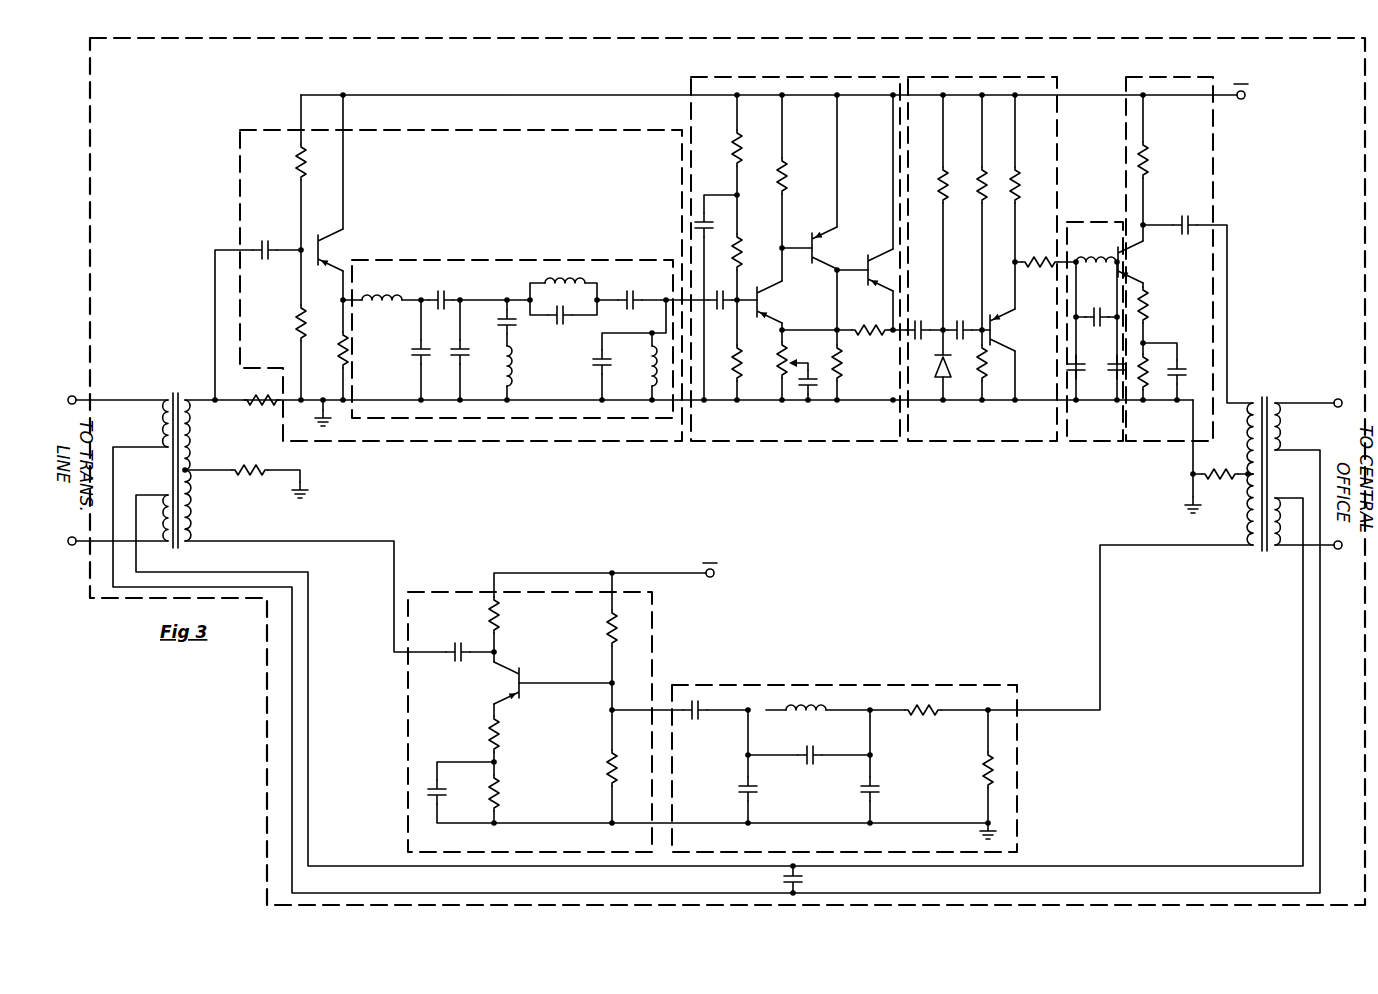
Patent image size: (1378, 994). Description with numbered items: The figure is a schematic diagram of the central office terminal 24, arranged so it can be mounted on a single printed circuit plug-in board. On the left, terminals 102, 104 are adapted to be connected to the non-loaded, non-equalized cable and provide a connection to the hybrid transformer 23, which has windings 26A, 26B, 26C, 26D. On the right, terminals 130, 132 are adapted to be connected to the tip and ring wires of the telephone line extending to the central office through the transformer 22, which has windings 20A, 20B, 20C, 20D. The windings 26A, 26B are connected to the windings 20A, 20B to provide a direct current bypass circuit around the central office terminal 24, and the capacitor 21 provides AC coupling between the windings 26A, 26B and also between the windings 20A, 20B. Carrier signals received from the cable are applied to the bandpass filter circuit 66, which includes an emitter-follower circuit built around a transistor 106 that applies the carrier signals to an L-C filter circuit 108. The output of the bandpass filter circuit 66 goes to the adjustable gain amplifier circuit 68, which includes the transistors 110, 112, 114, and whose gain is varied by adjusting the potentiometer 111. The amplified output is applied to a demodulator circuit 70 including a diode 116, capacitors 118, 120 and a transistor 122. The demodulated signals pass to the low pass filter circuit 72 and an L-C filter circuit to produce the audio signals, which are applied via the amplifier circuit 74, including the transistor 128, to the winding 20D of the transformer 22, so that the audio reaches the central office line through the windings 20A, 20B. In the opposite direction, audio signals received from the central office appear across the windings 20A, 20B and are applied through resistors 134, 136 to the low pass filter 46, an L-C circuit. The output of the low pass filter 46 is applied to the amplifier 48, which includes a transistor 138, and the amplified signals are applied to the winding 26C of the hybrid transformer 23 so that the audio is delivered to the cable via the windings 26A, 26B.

The central office terminal 24 is at (87, 157).
The bandpass filter circuit 66 is at (238, 162).
The adjustable gain amplifier circuit 68 is at (690, 85).
The demodulator circuit 70 is at (1003, 443).
The low pass filter circuit 72 is at (1100, 443).
The amplifier circuit 74 is at (1215, 152).
The L-C filter circuit 108 is at (483, 258).
The amplifier 48 is at (655, 640).
The low pass filter 46 is at (860, 684).
The transistor 106 is at (398, 207).
The transistor 110 is at (762, 297).
The transistor 112 is at (830, 240).
The transistor 114 is at (888, 292).
The transistor 122 is at (1010, 318).
The transistor 128 is at (1132, 262).
The transistor 138 is at (508, 688).
The potentiometer 111 is at (782, 370).
The diode 116 is at (948, 385).
The capacitor 118 is at (918, 320).
The capacitor 120 is at (975, 298).
The resistor 134 is at (925, 718).
The resistor 136 is at (982, 772).
The capacitor 21 is at (800, 879).
The terminal 102 is at (68, 397).
The terminal 104 is at (72, 546).
The terminal 130 is at (1339, 550).
The terminal 132 is at (1337, 398).
The hybrid transformer 23 is at (175, 392).
The winding 26A is at (160, 520).
The winding 26B is at (160, 421).
The winding 26C is at (200, 511).
The winding 26D is at (197, 436).
The transformer 22 is at (1258, 400).
The winding 20A is at (1280, 530).
The winding 20B is at (1280, 432).
The winding 20C is at (1247, 520).
The winding 20D is at (1248, 446).